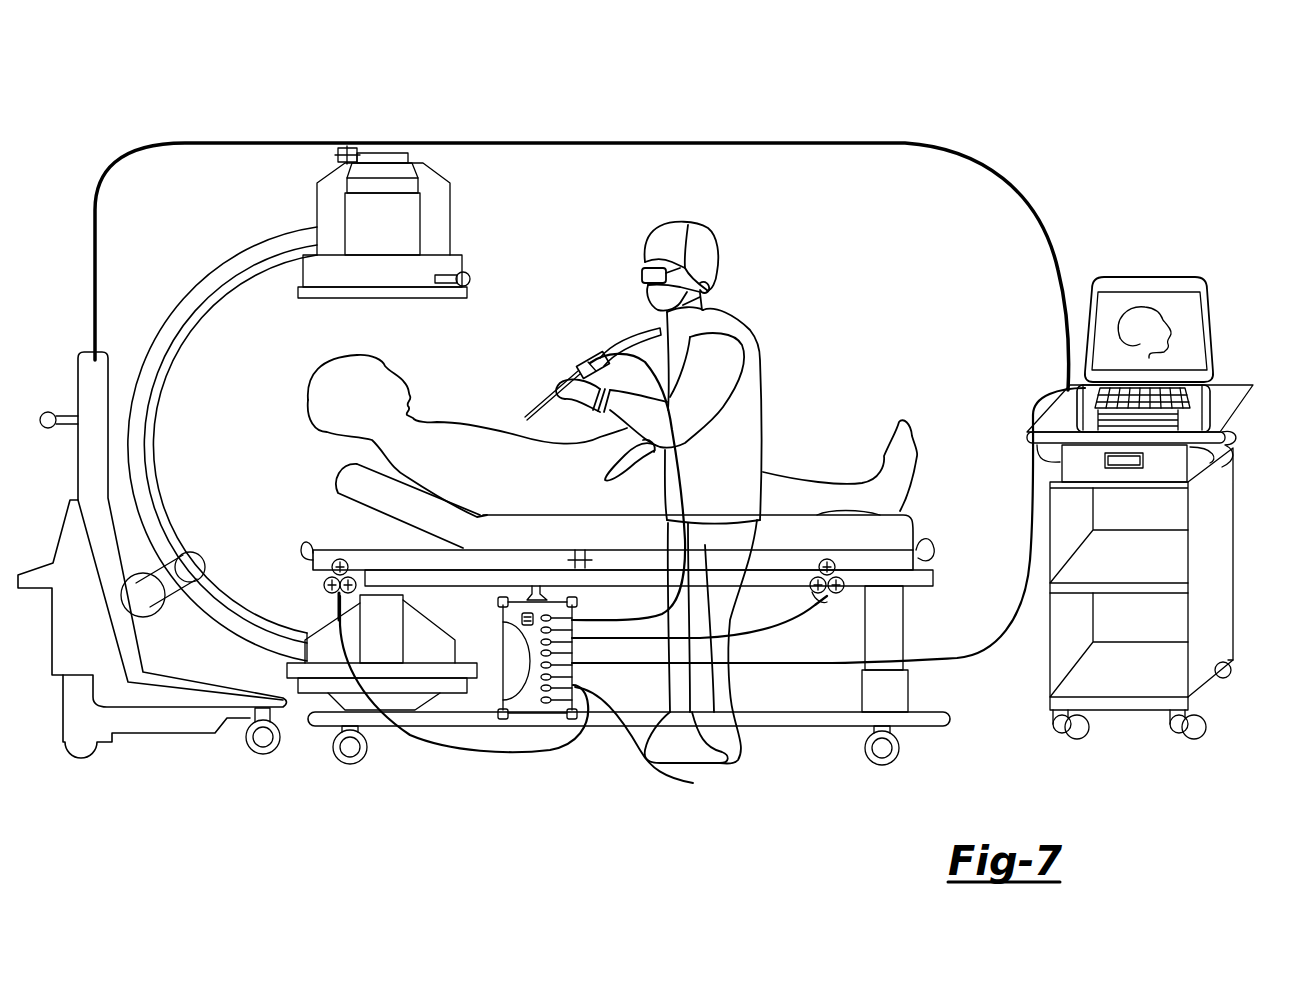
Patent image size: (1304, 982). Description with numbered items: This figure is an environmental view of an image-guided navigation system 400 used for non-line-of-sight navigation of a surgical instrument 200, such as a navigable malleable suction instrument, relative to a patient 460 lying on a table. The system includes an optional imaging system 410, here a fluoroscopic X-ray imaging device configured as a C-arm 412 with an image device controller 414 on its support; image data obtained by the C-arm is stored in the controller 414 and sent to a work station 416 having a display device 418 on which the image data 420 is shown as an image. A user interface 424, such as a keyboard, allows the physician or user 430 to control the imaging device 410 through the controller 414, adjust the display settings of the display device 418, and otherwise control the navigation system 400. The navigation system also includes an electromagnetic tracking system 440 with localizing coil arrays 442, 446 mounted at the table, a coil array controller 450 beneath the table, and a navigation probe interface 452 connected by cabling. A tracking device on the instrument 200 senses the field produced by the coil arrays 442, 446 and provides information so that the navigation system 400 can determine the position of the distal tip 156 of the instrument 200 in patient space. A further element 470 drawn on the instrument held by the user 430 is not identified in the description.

The image-guided navigation system 400 is at (966, 119).
The imaging system 410 is at (294, 204).
The C-arm 412 is at (193, 280).
The image device controller 414 is at (88, 363).
The work station 416 is at (1159, 469).
The display device 418 is at (1213, 333).
The image data 420 is at (1143, 310).
The user interface 424 is at (1200, 393).
The physician or user 430 is at (738, 330).
The patient 460 is at (455, 417).
The surgical instrument 200 is at (605, 440).
The instrument handle cable 470 is at (637, 328).
The distal tip 156 is at (540, 410).
The coil array 442 is at (323, 588).
The localizing coil array 446 is at (843, 597).
The electromagnetic tracking system 440 is at (474, 756).
The coil array controller 450 is at (532, 704).
The navigation probe interface 452 is at (539, 698).